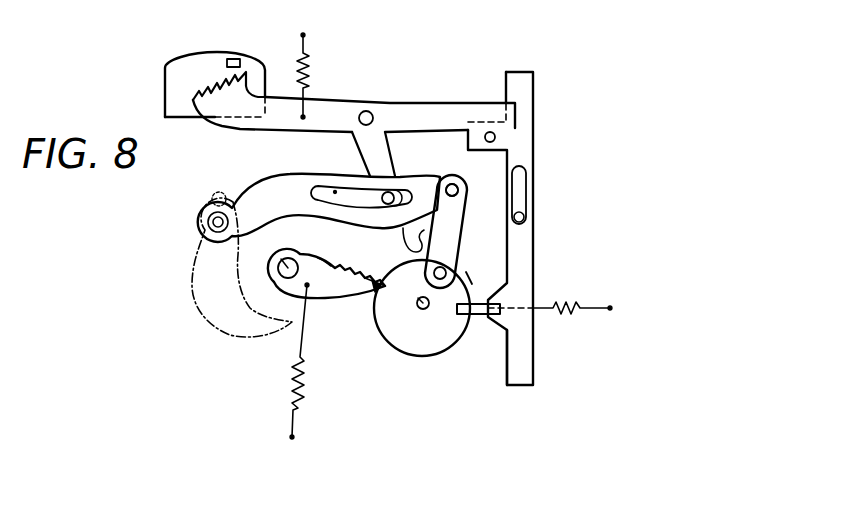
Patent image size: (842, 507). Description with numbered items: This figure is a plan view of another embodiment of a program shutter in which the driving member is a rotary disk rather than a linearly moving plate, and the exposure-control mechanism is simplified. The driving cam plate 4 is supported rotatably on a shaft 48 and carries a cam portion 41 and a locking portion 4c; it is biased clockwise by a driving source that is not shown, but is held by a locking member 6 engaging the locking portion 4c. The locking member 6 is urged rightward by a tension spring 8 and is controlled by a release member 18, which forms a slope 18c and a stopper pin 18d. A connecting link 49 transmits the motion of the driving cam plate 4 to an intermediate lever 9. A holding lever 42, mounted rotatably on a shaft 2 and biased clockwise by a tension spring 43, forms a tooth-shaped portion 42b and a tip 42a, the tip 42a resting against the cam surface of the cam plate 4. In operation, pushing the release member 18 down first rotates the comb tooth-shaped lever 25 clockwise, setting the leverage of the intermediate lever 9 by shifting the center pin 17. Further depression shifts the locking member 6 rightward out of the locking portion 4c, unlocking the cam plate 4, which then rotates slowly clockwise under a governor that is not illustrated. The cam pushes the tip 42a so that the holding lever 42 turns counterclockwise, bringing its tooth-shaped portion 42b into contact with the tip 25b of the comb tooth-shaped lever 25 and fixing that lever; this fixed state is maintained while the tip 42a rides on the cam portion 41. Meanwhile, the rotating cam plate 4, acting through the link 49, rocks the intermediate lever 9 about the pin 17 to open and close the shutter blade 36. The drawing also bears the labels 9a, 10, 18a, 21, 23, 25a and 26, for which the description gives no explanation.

The shaft 2 is at (283, 265).
The driving cam plate 4 is at (450, 337).
The locking portion 4c is at (463, 288).
The locking member 6 is at (478, 313).
The tension spring 8 is at (562, 303).
The intermediate lever member 9 is at (260, 195).
The lever slot 9a is at (334, 190).
The pivot pin 10 is at (213, 222).
The shifting center pin 17 is at (389, 193).
The release member 18 is at (524, 242).
The frame slot 18a is at (526, 188).
The slope 18c is at (503, 350).
The stopper pin 18d is at (497, 137).
The stop 21 is at (233, 57).
The pivot 23 is at (366, 110).
The comb tooth-shaped lever 25 is at (424, 112).
The ratchet teeth 25a is at (215, 86).
The tip 25b is at (436, 181).
The spring 26 is at (306, 55).
The shutter blade 36 is at (200, 290).
The cam portion 41 is at (377, 286).
The holding lever 42 is at (320, 298).
The tip 42a is at (363, 259).
The tooth-shaped portion 42b is at (327, 256).
The tension spring 43 is at (287, 365).
The shaft 48 is at (422, 309).
The connecting link 49 is at (457, 230).